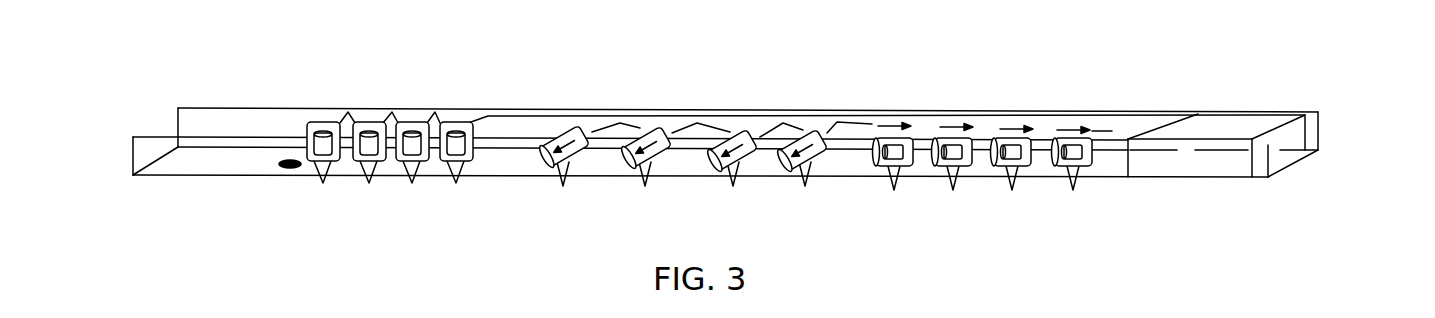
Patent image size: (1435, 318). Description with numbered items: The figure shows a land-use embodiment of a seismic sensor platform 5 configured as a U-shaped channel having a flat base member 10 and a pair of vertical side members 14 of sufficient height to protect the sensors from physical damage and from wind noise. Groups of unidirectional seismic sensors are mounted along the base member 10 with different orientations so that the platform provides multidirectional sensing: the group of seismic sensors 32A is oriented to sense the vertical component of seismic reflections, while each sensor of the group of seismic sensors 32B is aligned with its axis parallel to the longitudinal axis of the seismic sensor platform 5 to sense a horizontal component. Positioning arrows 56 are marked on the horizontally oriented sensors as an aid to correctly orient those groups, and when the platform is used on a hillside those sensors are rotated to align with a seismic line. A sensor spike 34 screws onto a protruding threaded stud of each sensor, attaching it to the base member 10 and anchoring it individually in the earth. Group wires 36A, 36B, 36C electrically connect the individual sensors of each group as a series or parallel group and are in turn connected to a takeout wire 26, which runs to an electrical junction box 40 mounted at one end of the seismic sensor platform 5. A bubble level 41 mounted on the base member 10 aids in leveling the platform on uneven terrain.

The seismic sensor platform 5 is at (731, 111).
The base member 10 is at (160, 155).
The vertical side members 14 is at (220, 108).
The takeout wire 26 is at (1092, 133).
The seismic sensors 32A is at (313, 122).
The seismic sensors 32B is at (585, 152).
The sensor spike 34 is at (370, 178).
The group wire 36A is at (528, 115).
The group wire 36B is at (622, 125).
The group wire 36C is at (985, 152).
The electrical junction box 40 is at (1183, 132).
The bubble level 41 is at (288, 160).
The positioning arrows 56 is at (948, 128).